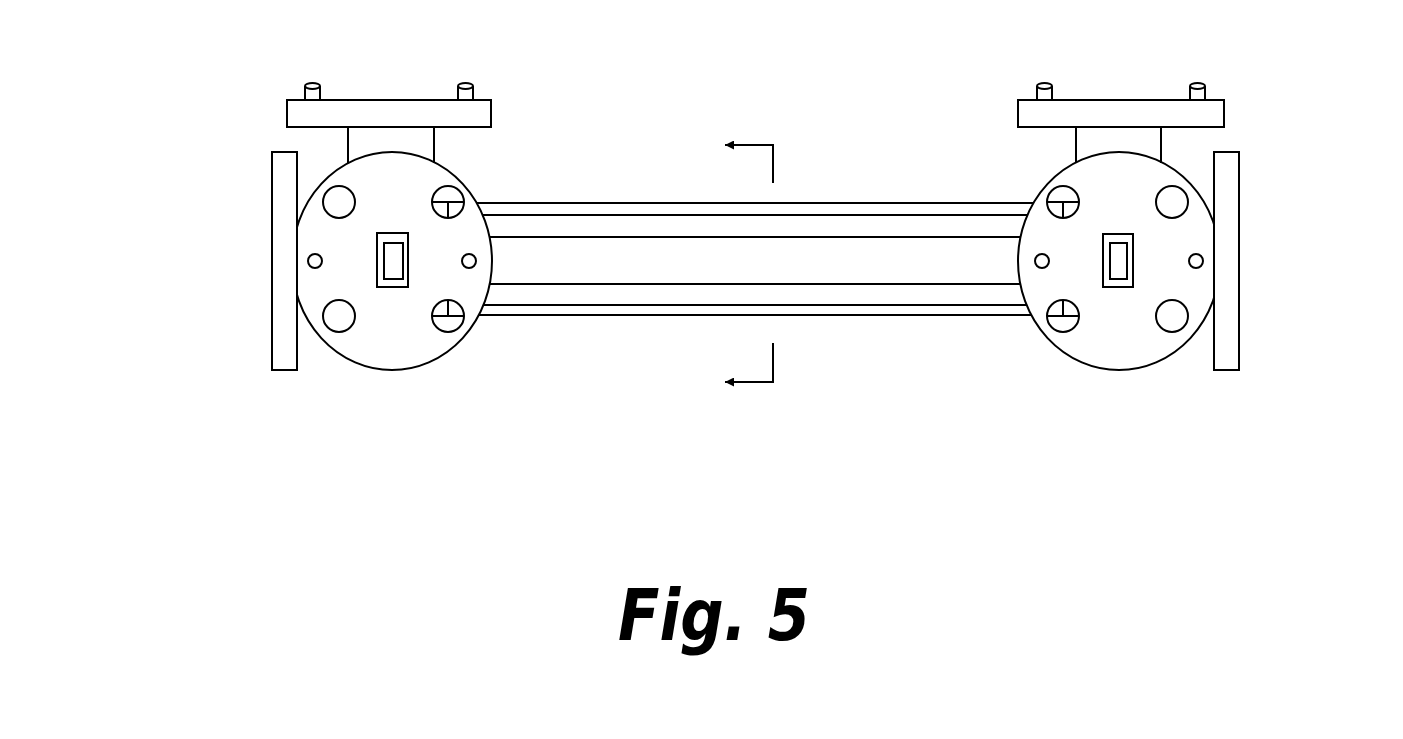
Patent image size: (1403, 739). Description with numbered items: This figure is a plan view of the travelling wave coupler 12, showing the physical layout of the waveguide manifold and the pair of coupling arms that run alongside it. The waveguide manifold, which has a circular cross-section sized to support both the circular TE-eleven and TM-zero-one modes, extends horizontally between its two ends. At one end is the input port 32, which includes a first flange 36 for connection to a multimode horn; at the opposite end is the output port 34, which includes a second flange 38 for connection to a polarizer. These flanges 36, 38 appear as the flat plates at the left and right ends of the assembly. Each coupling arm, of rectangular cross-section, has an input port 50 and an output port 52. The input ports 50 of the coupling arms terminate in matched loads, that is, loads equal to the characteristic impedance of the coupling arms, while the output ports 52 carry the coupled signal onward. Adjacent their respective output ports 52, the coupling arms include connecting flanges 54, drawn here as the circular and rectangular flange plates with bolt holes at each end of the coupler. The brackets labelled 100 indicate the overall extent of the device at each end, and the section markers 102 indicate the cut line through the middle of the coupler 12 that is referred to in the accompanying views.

The travelling wave coupler 12 is at (742, 515).
The input port 32 is at (257, 299).
The output port 34 is at (1261, 298).
The first flange 36 is at (285, 372).
The second flange 38 is at (1223, 372).
The input port 50 is at (400, 98).
The output port 52 is at (1125, 98).
The connecting flange 54 is at (789, 209).
The waveguide assembly 100 is at (758, 269).
The section line 102 is at (707, 263).